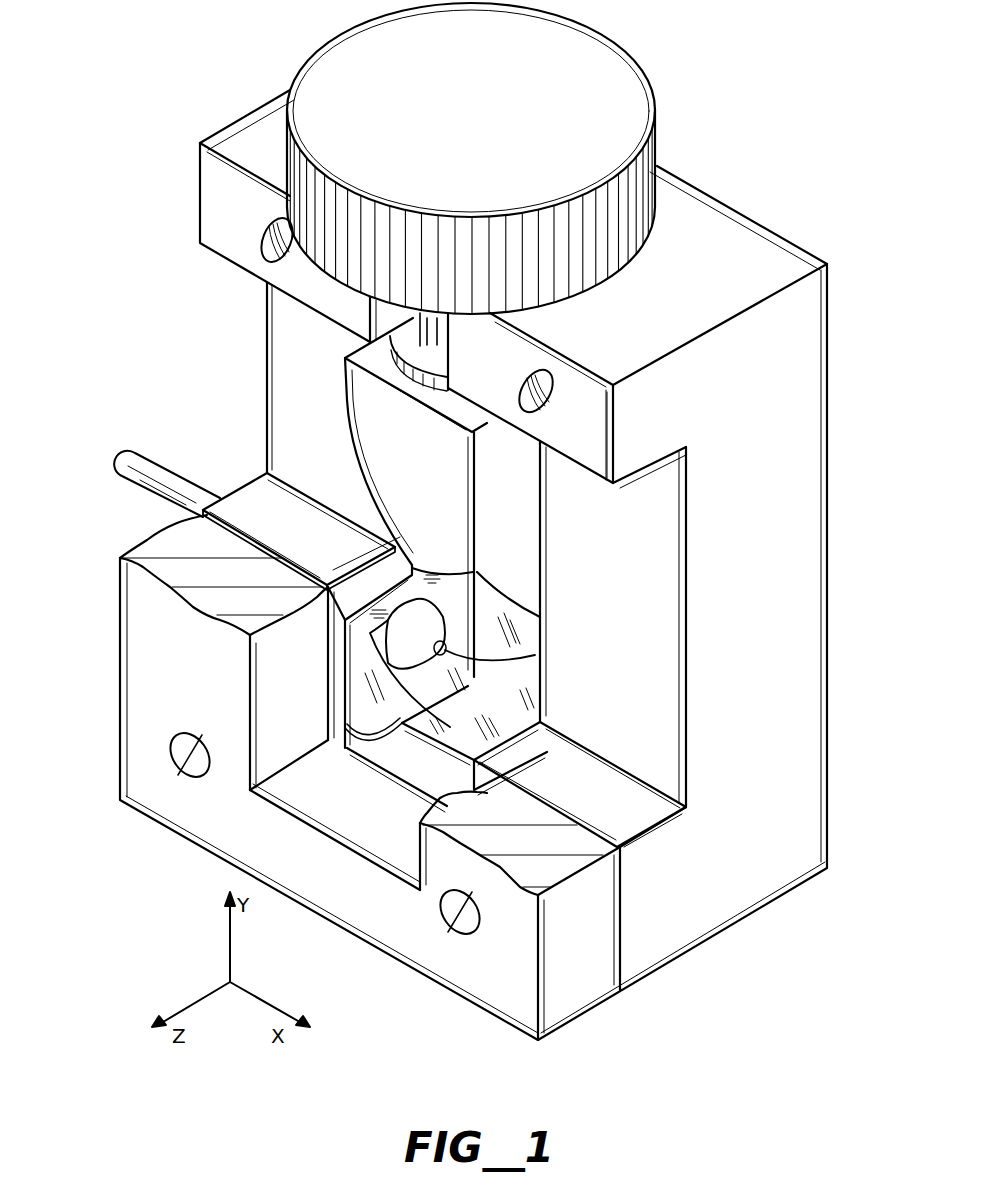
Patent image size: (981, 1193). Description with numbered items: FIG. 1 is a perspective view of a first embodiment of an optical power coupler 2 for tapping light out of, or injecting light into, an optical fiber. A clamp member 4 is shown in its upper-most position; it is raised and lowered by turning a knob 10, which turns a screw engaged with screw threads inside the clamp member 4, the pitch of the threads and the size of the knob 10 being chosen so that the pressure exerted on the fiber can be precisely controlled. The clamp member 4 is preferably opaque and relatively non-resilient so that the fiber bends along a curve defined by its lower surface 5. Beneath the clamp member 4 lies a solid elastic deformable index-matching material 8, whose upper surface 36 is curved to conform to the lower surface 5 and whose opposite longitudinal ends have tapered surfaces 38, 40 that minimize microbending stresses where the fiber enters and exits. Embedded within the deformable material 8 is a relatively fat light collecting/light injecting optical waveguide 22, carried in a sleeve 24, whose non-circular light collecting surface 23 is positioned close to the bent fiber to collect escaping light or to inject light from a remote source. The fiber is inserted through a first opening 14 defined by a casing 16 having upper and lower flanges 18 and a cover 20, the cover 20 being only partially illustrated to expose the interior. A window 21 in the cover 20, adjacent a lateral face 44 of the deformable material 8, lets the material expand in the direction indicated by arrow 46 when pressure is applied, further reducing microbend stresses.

The optical power coupler 2 is at (226, 62).
The clamp member 4 is at (346, 413).
The lower surface 5 is at (373, 493).
The solid elastic deformable index-matching material 8 is at (503, 725).
The knob 10 is at (595, 85).
The first opening 14 is at (640, 735).
The casing 16 is at (730, 205).
The upper and lower flanges 18 is at (638, 448).
The cover 20 is at (597, 1010).
The window 21 is at (402, 847).
The light collecting/light injecting optical waveguide 22 is at (152, 475).
The light collecting surface 23 is at (445, 647).
The sleeve 24 is at (403, 617).
The upper surface 36 is at (500, 598).
The tapered surface 38 is at (467, 732).
The tapered surface 40 is at (350, 643).
The lateral face 44 is at (388, 720).
The arrow 46 is at (330, 718).